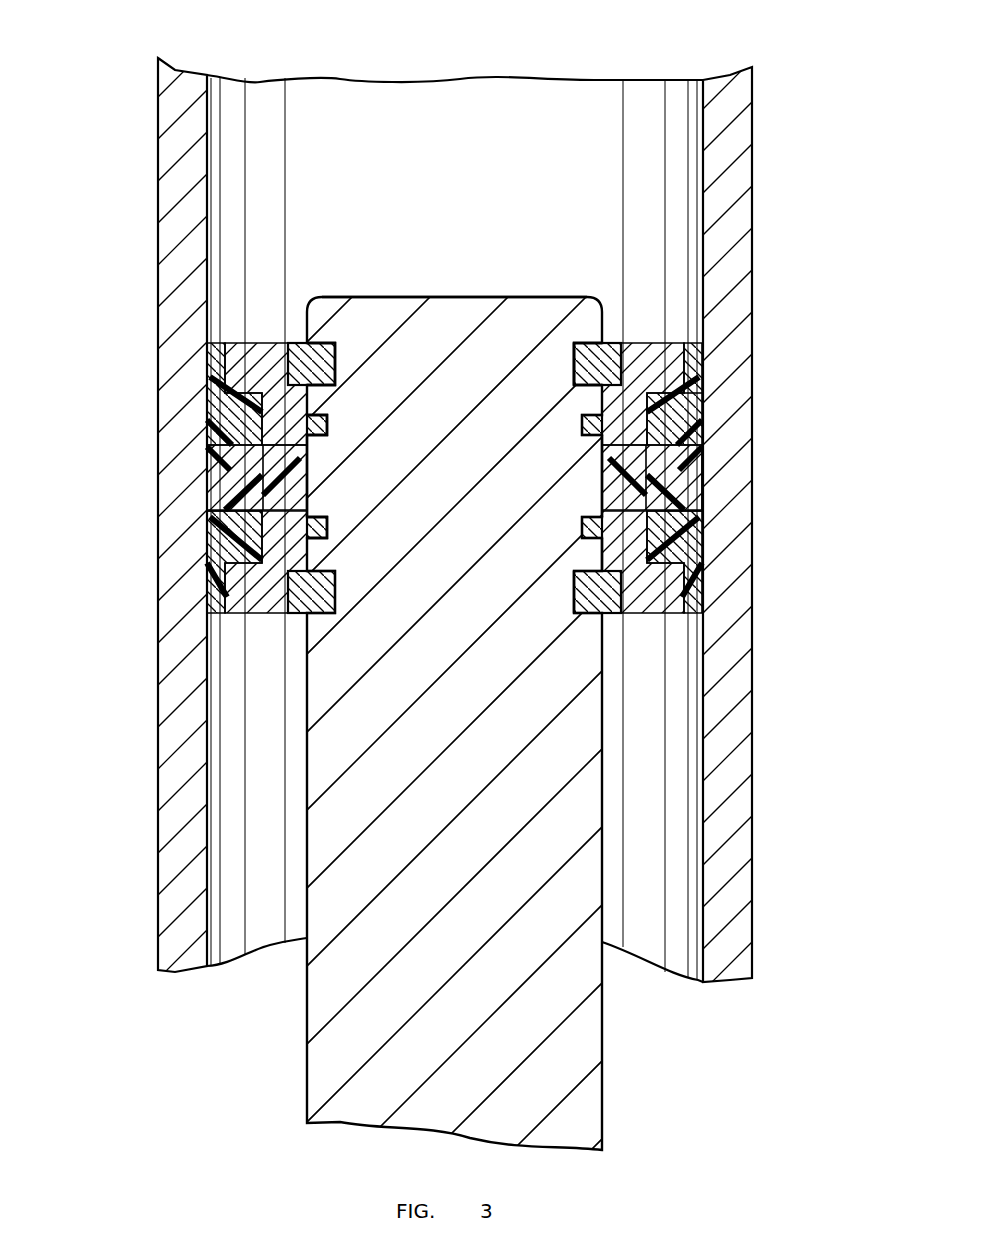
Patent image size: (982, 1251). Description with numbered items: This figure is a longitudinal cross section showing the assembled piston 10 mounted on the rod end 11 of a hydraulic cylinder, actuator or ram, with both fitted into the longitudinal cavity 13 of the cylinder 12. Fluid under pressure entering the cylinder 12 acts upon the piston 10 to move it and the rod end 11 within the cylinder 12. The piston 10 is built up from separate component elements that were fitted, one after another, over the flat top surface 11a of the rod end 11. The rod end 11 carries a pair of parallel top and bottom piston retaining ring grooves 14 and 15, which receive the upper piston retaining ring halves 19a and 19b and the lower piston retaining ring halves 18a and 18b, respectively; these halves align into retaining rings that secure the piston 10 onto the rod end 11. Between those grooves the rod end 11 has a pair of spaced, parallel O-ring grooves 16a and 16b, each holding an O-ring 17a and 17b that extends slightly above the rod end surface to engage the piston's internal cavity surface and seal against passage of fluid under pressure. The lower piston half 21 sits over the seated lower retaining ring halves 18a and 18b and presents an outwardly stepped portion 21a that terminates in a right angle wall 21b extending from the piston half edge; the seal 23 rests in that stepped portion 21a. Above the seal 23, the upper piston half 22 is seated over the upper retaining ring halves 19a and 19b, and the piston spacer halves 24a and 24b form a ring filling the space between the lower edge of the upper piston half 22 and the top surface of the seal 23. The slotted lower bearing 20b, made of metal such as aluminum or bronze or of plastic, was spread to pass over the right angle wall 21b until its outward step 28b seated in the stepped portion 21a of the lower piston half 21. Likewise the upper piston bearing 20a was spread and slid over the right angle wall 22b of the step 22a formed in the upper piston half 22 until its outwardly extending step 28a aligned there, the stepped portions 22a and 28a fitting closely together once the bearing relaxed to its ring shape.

The piston 10 is at (706, 505).
The rod end 11 is at (451, 805).
The flat top surface 11a is at (520, 297).
The cylinder 12 is at (732, 152).
The longitudinal cavity 13 is at (703, 125).
The top piston retaining ring groove 14 is at (575, 358).
The bottom piston retaining ring groove 15 is at (575, 582).
The O-ring groove 16a is at (327, 428).
The O-ring groove 16b is at (327, 527).
The O-ring 17a is at (320, 415).
The O-ring 17b is at (330, 570).
The lower piston retaining ring half 18a is at (305, 615).
The lower piston retaining ring half 18b is at (575, 610).
The upper piston retaining ring half 19a is at (317, 342).
The upper piston retaining ring half 19b is at (607, 347).
The upper piston bearing 20a is at (220, 400).
The lower bearing 20b is at (222, 578).
The lower piston half 21 is at (240, 560).
The outwardly stepped portion 21a is at (235, 521).
The right angle wall 21b is at (590, 613).
The upper piston half 22 is at (250, 353).
The step 22a is at (325, 343).
The right angle wall 22b is at (578, 388).
The seal 23 is at (215, 483).
The piston spacer half 24a is at (330, 472).
The piston spacer half 24b is at (598, 473).
The outwardly extending step 28a is at (685, 410).
The outward step 28b is at (602, 560).